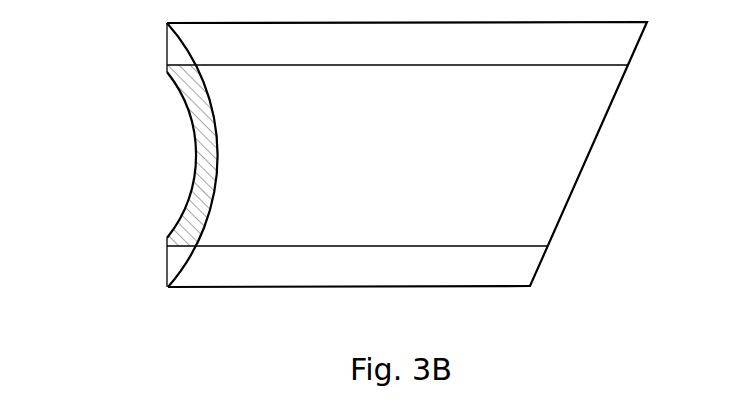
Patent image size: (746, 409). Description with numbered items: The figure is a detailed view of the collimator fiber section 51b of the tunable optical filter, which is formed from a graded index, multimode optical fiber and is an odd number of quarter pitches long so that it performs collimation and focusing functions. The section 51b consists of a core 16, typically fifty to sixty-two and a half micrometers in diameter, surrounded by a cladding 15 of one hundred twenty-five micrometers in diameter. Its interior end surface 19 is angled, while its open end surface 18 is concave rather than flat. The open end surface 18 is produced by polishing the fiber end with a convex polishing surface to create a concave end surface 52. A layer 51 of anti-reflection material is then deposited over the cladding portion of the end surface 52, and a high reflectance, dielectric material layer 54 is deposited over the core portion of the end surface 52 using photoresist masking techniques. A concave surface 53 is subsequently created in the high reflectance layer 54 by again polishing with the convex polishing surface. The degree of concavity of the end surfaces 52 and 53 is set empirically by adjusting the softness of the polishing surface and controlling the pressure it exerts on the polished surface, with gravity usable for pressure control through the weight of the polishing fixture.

The concave open end surface 18 is at (116, 154).
The concave end surface 52 is at (217, 144).
The concave surface 53 is at (193, 193).
The high reflectance dielectric material layer 54 is at (202, 125).
The layer of anti-reflection material 51 is at (174, 46).
The core 16 is at (561, 101).
The cladding 15 is at (443, 270).
The collimator fiber section 51b is at (580, 330).
The interior end surface 19 is at (603, 183).